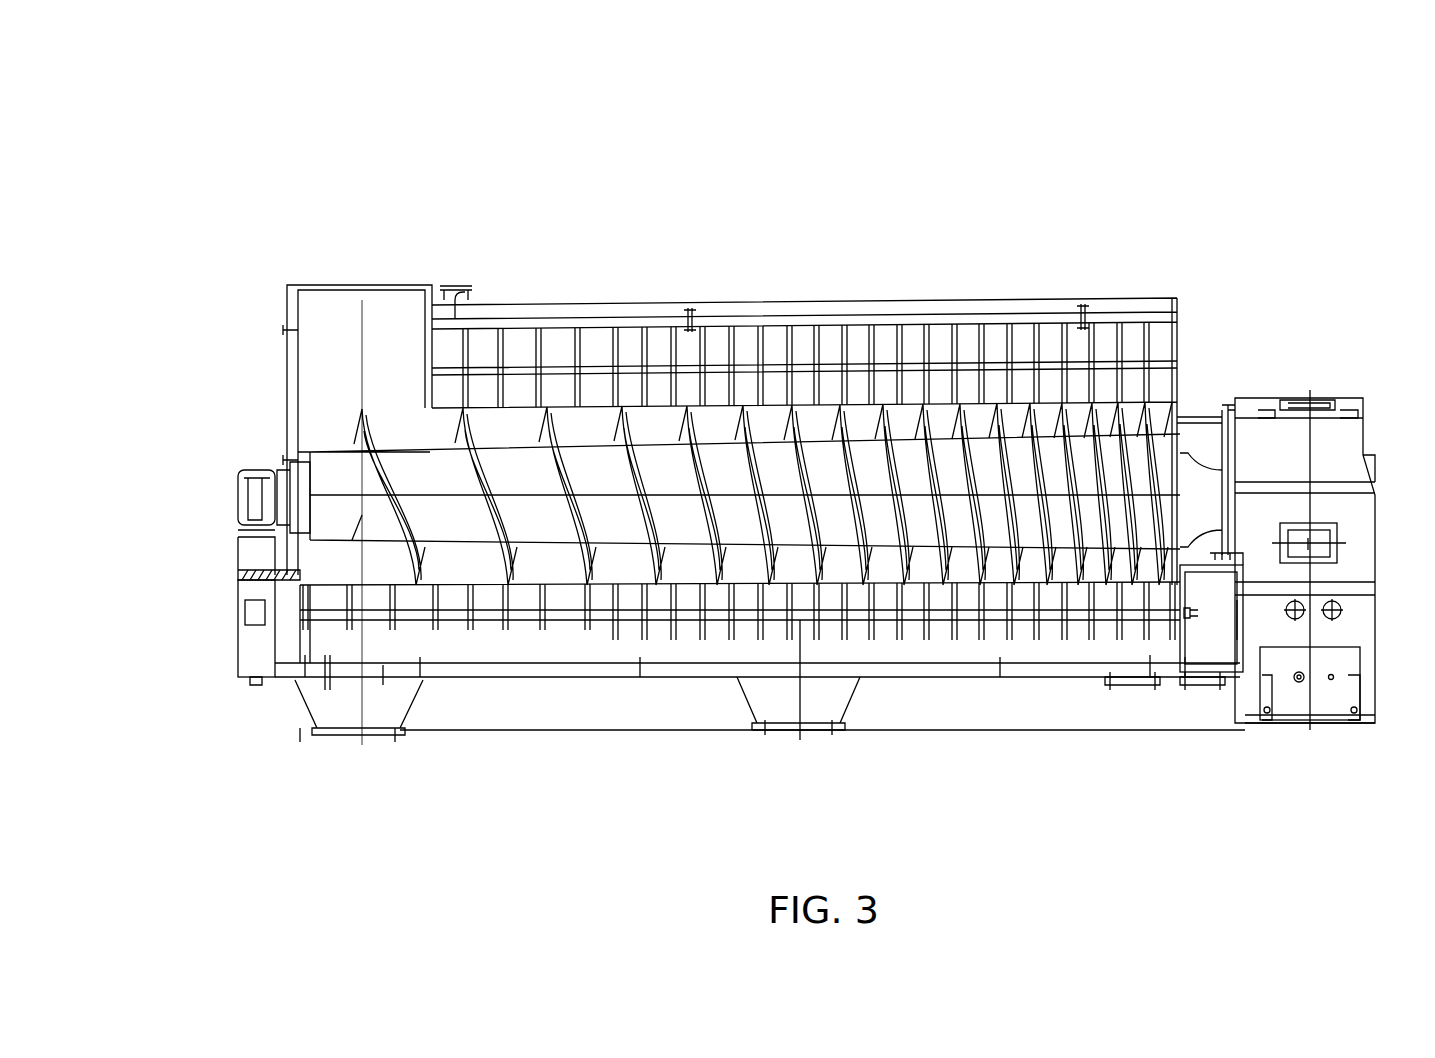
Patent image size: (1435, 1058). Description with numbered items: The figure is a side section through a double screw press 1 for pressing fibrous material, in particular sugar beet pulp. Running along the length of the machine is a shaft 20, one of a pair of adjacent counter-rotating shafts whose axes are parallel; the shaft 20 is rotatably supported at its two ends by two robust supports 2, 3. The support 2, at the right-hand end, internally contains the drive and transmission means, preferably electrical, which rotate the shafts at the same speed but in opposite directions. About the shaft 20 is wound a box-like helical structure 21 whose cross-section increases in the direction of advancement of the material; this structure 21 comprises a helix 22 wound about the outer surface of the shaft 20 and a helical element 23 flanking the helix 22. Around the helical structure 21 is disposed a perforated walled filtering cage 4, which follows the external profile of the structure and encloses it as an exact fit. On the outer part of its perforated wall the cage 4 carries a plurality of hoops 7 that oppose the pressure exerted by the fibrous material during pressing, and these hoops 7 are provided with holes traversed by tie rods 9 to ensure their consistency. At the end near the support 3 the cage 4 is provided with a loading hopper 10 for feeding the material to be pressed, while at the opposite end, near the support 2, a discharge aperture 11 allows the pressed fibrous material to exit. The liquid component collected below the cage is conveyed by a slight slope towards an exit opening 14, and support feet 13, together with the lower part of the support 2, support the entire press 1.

The double screw press 1 is at (1280, 196).
The support 2 is at (1310, 398).
The support 3 is at (226, 654).
The filtering cage 4 is at (937, 404).
The hoops 7 is at (1017, 347).
The tie rods 9 is at (520, 345).
The loading hopper 10 is at (330, 288).
The discharge aperture 11 is at (1195, 678).
The support feet 13 is at (310, 708).
The exit opening 14 is at (1127, 682).
The shaft 20 is at (1172, 440).
The box-like helical structure 21 is at (705, 420).
The helix 22 is at (756, 378).
The helical element 23 is at (540, 440).